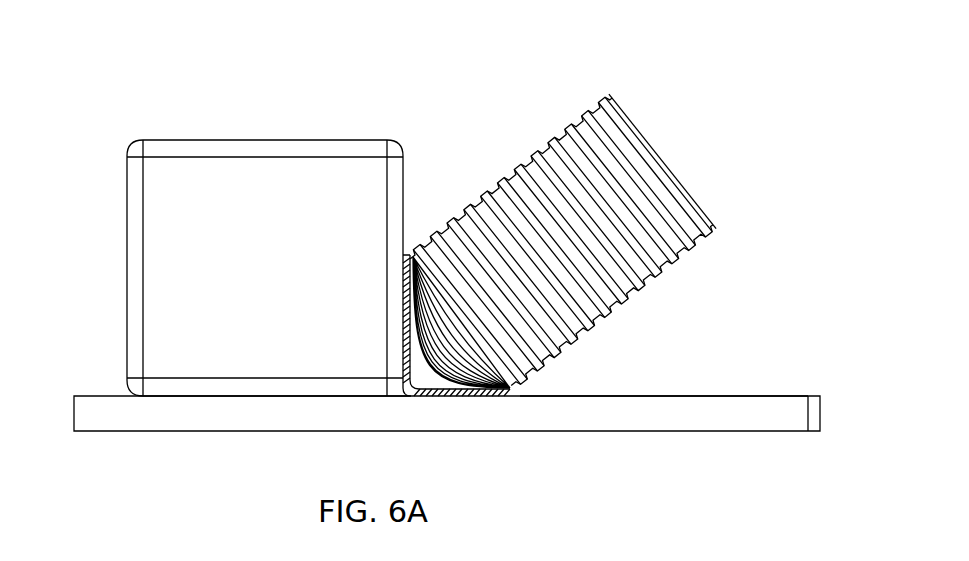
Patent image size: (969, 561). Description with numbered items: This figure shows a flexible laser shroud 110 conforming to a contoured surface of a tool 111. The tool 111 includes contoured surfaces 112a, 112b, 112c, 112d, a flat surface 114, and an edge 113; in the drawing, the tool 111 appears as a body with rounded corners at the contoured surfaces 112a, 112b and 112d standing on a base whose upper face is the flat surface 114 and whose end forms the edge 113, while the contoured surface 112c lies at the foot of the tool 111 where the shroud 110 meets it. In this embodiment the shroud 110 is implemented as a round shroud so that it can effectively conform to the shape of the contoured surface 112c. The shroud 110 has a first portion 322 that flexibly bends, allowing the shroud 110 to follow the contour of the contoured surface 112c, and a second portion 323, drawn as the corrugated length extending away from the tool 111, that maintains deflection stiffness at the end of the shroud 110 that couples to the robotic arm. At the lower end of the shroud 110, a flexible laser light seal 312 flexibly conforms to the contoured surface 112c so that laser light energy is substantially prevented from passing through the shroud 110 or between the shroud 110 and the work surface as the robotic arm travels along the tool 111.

The flexible laser shroud 110 is at (571, 239).
The tool 111 is at (108, 235).
The contoured surface 112a is at (140, 138).
The contoured surface 112b is at (400, 142).
The contoured surface 112c is at (398, 397).
The contoured surface 112d is at (125, 393).
The edge 113 is at (822, 415).
The flat surface 114 is at (735, 396).
The flexible laser light seal 312 is at (515, 392).
The first portion 322 is at (414, 252).
The second portion 323 is at (603, 97).